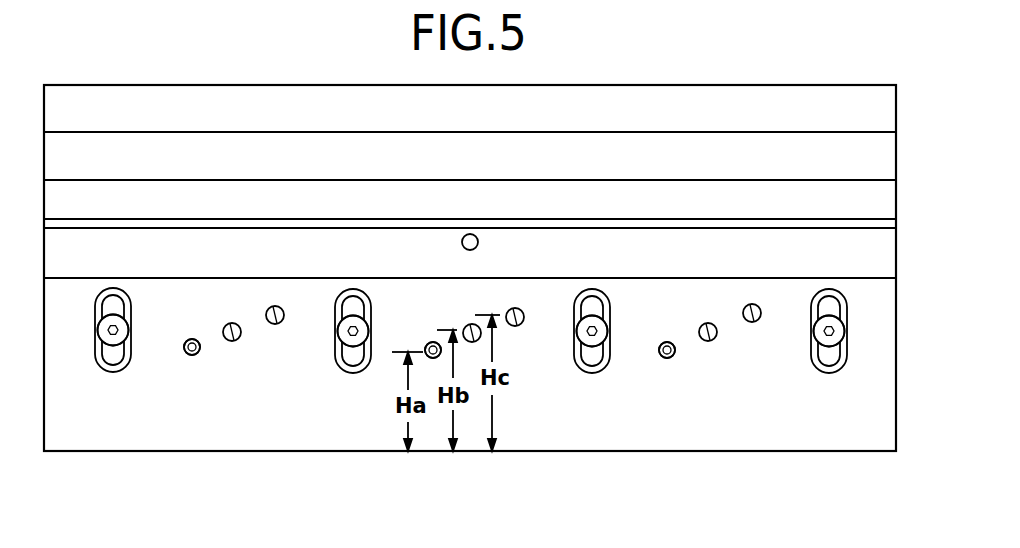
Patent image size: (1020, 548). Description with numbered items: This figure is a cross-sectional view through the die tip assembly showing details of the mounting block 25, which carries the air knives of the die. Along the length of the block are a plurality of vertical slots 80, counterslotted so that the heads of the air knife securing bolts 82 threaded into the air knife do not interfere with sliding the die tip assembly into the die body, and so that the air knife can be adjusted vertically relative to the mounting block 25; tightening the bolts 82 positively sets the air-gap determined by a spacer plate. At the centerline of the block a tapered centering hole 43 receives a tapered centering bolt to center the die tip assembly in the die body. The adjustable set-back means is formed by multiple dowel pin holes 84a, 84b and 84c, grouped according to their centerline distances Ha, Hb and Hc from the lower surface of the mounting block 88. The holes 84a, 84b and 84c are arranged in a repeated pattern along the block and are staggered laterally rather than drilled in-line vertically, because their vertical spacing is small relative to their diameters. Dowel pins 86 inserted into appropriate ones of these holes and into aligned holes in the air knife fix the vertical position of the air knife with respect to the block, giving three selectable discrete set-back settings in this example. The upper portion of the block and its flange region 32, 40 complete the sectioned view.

The mounting block 25 is at (670, 82).
The upper rail section 32 is at (169, 147).
The mounting flange 40 is at (585, 248).
The tapered centering hole 43 is at (478, 242).
The vertical slots 80 is at (110, 300).
The air knife securing bolts 82 is at (105, 330).
The dowel pin holes 84a is at (193, 356).
The dowel pin holes 84b is at (232, 341).
The dowel pin holes 84c is at (275, 324).
The dowel pins 86 is at (183, 347).
The lower surface of mounting block 88 is at (88, 452).